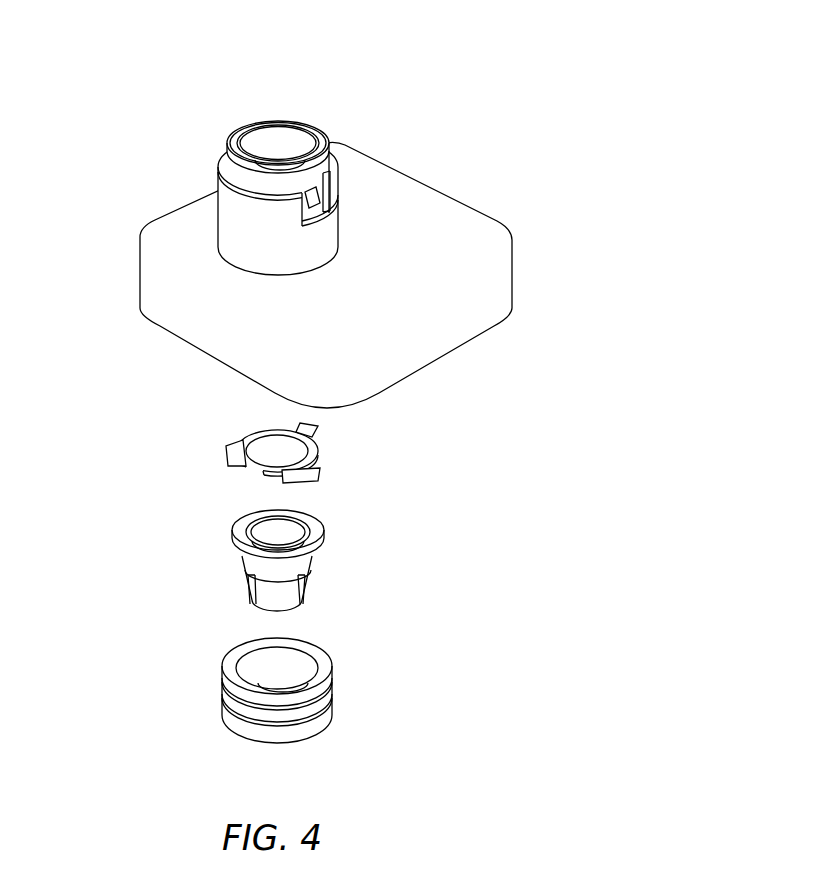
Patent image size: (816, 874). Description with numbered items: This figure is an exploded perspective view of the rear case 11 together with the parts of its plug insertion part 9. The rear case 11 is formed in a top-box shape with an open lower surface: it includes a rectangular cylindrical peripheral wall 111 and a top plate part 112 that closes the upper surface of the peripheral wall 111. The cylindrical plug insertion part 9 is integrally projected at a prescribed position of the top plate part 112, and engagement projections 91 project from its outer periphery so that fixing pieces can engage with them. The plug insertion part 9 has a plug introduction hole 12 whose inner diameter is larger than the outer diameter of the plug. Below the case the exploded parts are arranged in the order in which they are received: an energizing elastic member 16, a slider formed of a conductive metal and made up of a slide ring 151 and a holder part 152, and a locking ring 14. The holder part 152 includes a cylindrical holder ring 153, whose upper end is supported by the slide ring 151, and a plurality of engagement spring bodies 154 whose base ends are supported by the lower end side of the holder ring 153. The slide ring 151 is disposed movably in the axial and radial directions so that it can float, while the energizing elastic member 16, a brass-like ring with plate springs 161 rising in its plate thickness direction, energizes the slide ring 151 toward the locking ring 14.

The plug insertion part 9 is at (230, 215).
The rear case 11 is at (401, 239).
The plug introduction hole 12 is at (267, 143).
The locking ring 14 is at (333, 702).
The energizing elastic member 16 is at (272, 446).
The engagement projection 91 is at (326, 158).
The peripheral wall 111 is at (401, 239).
The top plate part 112 is at (430, 207).
The slide ring 151 is at (324, 536).
The holder part 152 is at (246, 588).
The holder ring 153 is at (247, 570).
The engagement spring body 154 is at (250, 597).
The plate spring 161 is at (243, 433).